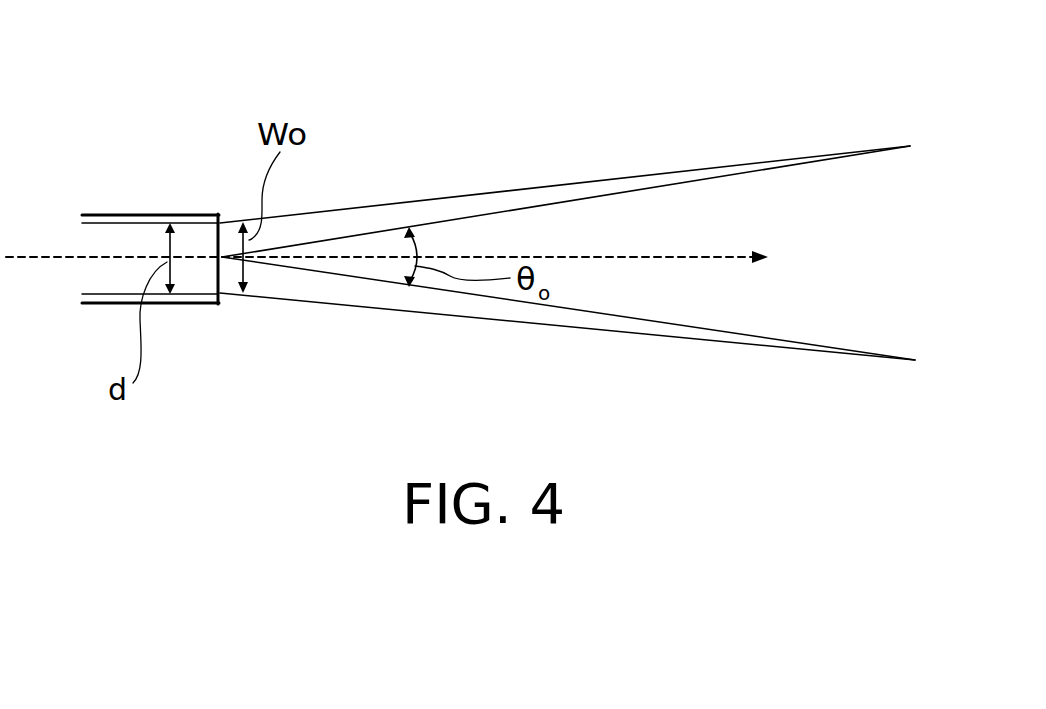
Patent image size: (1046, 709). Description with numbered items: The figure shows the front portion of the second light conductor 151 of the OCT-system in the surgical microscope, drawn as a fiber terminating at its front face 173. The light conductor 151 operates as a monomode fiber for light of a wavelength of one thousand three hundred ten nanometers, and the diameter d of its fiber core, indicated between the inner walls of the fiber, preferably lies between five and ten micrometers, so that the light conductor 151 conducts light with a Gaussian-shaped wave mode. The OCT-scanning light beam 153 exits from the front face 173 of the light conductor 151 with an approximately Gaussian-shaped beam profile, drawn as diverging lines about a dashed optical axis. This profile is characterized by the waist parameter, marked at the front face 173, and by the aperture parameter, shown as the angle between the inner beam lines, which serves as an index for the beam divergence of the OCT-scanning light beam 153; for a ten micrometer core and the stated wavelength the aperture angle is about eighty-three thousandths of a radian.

The second light conductor 151 is at (134, 176).
The OCT-scanning light beam 153 is at (319, 223).
The front face 173 is at (222, 292).